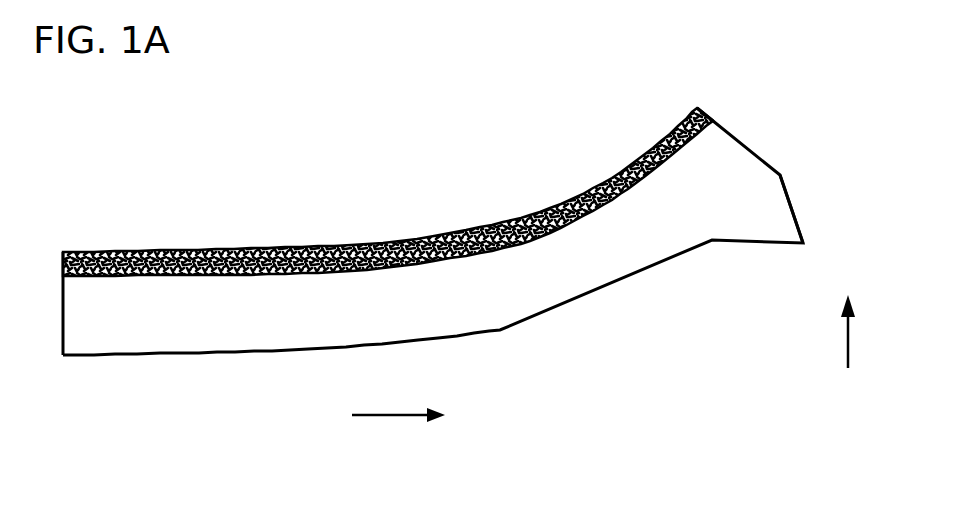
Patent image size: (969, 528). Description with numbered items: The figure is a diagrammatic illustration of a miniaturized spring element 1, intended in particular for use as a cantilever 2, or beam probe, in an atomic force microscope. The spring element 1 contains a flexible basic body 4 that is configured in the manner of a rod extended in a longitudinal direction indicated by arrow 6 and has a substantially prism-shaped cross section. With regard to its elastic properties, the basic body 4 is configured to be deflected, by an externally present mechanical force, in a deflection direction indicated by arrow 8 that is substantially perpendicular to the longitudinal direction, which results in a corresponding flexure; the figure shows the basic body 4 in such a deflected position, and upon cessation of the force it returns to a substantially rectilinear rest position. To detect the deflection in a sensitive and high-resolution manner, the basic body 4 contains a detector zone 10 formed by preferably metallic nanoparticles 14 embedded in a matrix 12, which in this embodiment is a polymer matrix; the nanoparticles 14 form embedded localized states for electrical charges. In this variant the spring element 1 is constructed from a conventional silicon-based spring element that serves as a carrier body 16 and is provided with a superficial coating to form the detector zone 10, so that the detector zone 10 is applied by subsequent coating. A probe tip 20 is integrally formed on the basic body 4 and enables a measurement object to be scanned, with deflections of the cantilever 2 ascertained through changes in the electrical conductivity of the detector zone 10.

The miniaturized spring element 1 is at (762, 157).
The cantilever 2 is at (697, 108).
The flexible basic body 4 is at (92, 305).
The arrow indicating longitudinal direction 6 is at (392, 416).
The arrow indicating deflection direction 8 is at (848, 335).
The detector zone 10 is at (480, 227).
The matrix 12 is at (162, 252).
The nanoparticles 14 is at (247, 250).
The carrier body 16 is at (383, 243).
The probe tip 20 is at (795, 213).